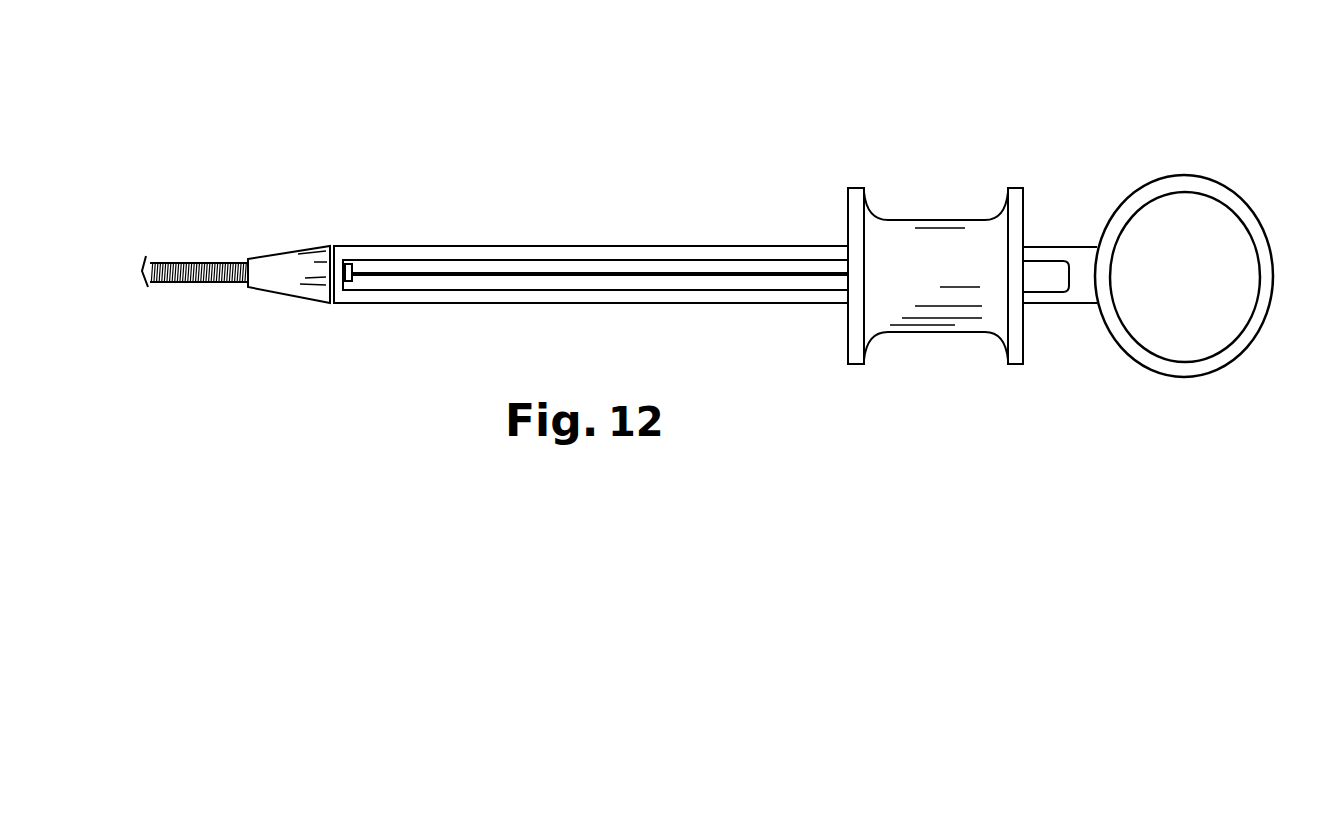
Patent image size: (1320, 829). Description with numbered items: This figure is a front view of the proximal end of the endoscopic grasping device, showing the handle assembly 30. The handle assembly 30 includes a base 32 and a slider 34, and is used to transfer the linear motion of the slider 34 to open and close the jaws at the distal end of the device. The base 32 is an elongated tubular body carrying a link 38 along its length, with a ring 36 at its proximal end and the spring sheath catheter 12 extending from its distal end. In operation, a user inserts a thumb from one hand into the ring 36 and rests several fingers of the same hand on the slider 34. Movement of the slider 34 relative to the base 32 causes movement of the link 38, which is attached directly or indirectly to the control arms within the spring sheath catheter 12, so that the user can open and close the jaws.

The handle assembly 30 is at (1022, 82).
The spring sheath catheter 12 is at (189, 283).
The base 32 is at (720, 246).
The slider 34 is at (907, 308).
The ring 36 is at (1210, 176).
The link 38 is at (650, 277).